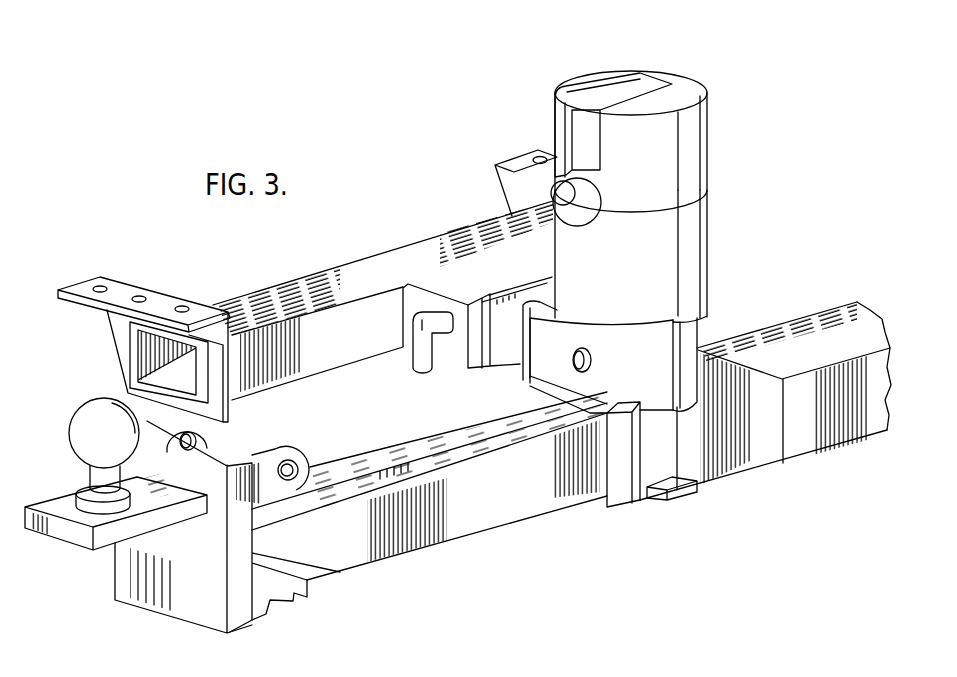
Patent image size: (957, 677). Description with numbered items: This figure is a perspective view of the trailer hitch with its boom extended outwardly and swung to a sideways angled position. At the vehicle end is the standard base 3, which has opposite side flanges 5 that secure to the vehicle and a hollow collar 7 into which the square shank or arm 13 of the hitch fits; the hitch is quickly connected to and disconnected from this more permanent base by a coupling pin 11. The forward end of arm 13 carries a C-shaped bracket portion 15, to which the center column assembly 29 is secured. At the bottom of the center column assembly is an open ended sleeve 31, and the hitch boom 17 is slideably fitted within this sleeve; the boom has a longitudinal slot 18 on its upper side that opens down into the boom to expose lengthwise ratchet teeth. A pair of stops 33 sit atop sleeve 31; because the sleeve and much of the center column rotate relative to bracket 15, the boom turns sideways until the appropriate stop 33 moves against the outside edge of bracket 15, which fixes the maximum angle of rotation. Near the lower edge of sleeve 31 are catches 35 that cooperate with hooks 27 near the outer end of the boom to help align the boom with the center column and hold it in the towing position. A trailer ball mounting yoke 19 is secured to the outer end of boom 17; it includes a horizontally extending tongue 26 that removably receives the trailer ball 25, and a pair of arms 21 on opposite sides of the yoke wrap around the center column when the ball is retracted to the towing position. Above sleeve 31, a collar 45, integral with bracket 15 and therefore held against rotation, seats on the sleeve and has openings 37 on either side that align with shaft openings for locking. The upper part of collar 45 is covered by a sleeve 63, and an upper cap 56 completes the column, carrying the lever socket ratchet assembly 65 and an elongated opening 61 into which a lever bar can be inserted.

The base 3 is at (373, 272).
The side flanges 5 is at (125, 282).
The hollow collar 7 is at (462, 285).
The coupling pin 11 is at (422, 348).
The arm 13 is at (504, 344).
The C-shaped bracket portion 15 is at (526, 384).
The hitch boom 17 is at (492, 513).
The longitudinal slot 18 is at (360, 478).
The trailer ball mounting yoke 19 is at (237, 540).
The arms 21 is at (262, 470).
The trailer ball 25 is at (90, 421).
The tongue 26 is at (66, 531).
The hooks 27 is at (280, 590).
The center column assembly 29 is at (672, 232).
The sleeve 31 is at (750, 457).
The stops 33 is at (528, 386).
The catches 35 is at (679, 492).
The openings 37 is at (592, 359).
The collar 45 is at (698, 334).
The upper cap 56 is at (707, 150).
The elongated opening 61 is at (587, 110).
The sleeve 63 is at (703, 281).
The lever socket ratchet assembly 65 is at (603, 232).